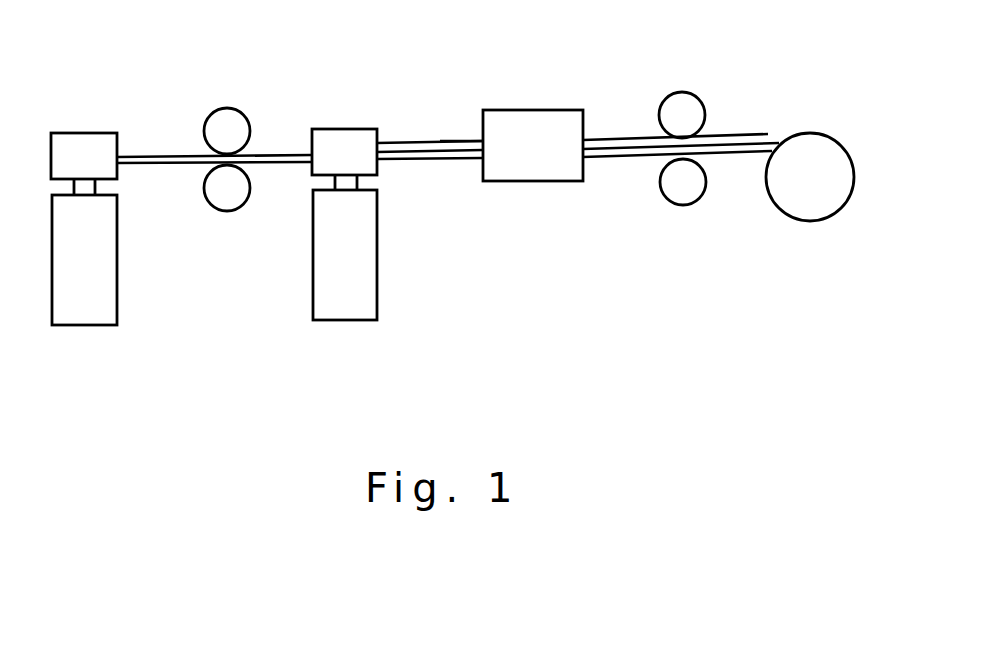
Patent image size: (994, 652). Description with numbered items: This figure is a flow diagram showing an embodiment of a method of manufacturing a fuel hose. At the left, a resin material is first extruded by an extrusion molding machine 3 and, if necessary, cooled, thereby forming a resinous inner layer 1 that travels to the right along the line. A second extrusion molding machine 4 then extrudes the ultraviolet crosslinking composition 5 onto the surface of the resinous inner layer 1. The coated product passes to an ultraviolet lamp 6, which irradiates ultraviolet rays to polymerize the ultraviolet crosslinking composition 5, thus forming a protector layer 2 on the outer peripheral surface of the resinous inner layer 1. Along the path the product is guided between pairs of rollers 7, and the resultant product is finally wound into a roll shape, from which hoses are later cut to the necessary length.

The resinous inner layer 1 is at (280, 155).
The protector layer 2 is at (625, 140).
The extrusion molding machine 3 is at (94, 315).
The extrusion molding machine 4 is at (353, 312).
The ultraviolet crosslinking composition 5 is at (448, 142).
The ultraviolet lamp 6 is at (536, 120).
The roller 7 is at (225, 122).